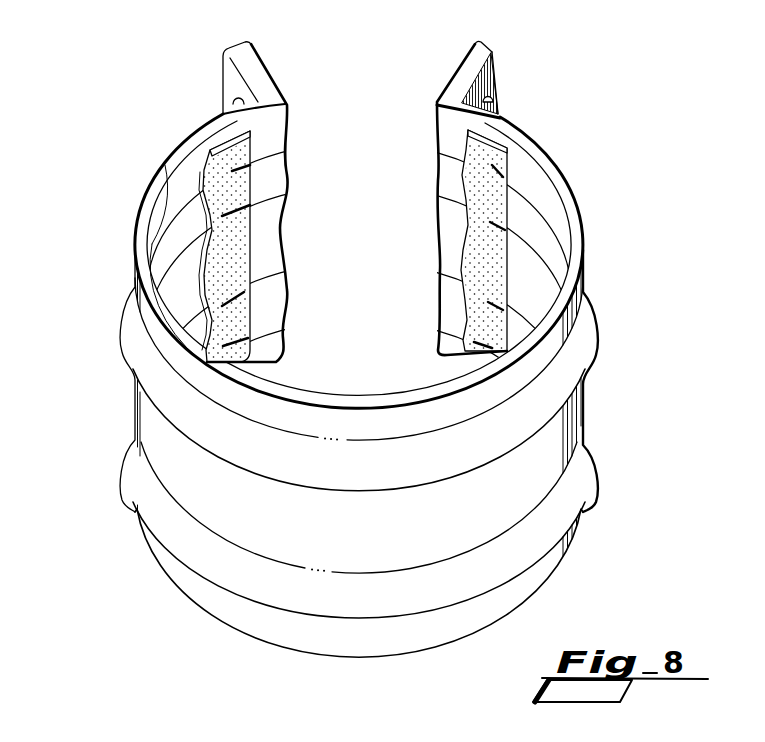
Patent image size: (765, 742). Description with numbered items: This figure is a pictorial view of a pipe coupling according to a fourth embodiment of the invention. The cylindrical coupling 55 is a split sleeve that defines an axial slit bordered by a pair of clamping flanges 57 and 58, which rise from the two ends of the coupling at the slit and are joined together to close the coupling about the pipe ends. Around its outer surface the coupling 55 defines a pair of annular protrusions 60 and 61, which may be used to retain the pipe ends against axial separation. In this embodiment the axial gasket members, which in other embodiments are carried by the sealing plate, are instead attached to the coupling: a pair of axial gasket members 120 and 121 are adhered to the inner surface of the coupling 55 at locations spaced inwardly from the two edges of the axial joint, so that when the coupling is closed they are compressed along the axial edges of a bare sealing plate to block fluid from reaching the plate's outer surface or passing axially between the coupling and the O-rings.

The cylindrical coupling 55 is at (600, 172).
The clamping flange 57 is at (488, 41).
The clamping flange 58 is at (230, 52).
The annular protrusion 60 is at (435, 188).
The annular protrusion 61 is at (447, 313).
The axial gasket member 120 is at (490, 150).
The axial gasket member 121 is at (218, 197).